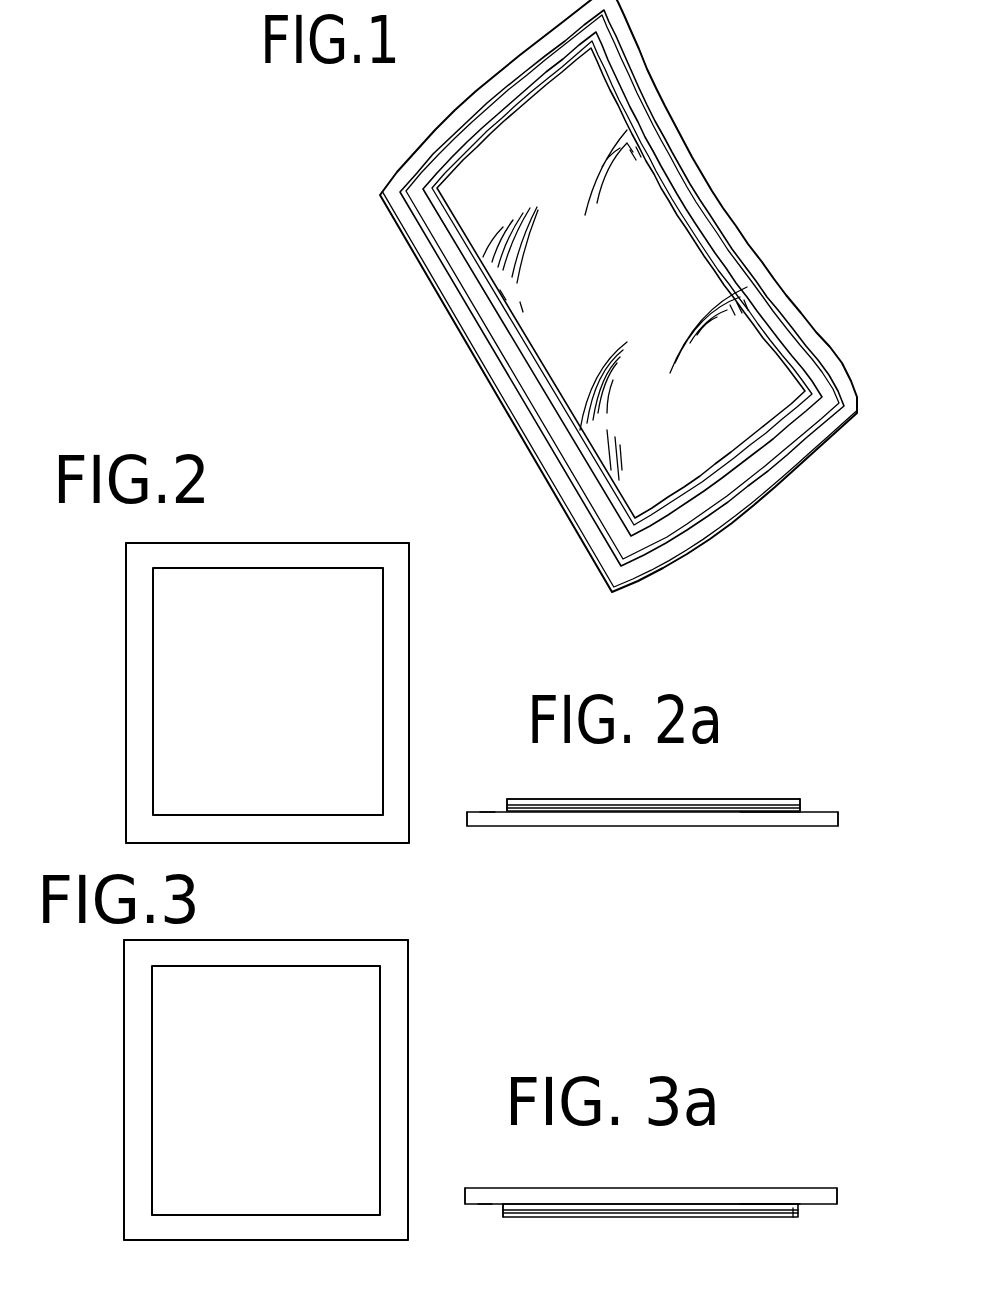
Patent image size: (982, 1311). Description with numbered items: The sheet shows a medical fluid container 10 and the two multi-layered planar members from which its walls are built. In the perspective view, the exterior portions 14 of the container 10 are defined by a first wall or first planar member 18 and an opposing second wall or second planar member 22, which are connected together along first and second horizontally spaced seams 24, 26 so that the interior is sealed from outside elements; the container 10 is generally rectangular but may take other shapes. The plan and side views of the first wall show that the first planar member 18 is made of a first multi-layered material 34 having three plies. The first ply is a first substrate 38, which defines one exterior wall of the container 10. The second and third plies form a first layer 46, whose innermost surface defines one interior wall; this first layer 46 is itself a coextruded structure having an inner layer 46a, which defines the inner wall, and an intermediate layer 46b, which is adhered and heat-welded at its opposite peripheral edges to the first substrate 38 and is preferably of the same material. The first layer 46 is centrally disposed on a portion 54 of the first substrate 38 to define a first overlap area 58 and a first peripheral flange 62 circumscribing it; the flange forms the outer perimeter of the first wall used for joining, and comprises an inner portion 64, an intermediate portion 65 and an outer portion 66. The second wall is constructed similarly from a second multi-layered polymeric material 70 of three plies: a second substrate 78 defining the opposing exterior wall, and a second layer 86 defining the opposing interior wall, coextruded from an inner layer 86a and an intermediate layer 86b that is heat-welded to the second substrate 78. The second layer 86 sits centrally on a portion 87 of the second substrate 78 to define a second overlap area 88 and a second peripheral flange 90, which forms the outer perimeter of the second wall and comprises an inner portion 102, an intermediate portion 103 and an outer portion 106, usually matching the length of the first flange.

In FIG. 1, the container 10 is at (742, 143).
In FIG. 1, the exterior portions 14 is at (662, 256).
In FIG. 1, the first planar member 18 is at (478, 222).
In FIG. 2, the first planar member 18 is at (125, 572).
In FIG. 1, the second planar member 22 is at (468, 340).
In FIG. 3, the second planar member 22 is at (123, 975).
In FIG. 1, the first seam 24 is at (560, 414).
In FIG. 1, the second seam 26 is at (577, 493).
In FIG. 2, the first multi-layered material 34 is at (269, 539).
In FIG. 2A, the first multi-layered material 34 is at (718, 787).
In FIG. 2, the first substrate 38 is at (127, 657).
In FIG. 2A, the first substrate 38 is at (687, 818).
In FIG. 2, the first layer 46 is at (152, 728).
In FIG. 2A, the first layer 46 is at (602, 805).
In FIG. 2A, the inner layer 46a is at (620, 800).
In FIG. 2A, the intermediate layer 46b is at (773, 809).
In FIG. 2, the portion of the first substrate 54 is at (378, 566).
In FIG. 2A, the portion of the first substrate 54 is at (803, 814).
In FIG. 2, the first overlap area 58 is at (242, 750).
In FIG. 2A, the first overlap area 58 is at (757, 813).
In FIG. 2, the first peripheral flange 62 is at (393, 618).
In FIG. 2A, the first peripheral flange 62 is at (820, 803).
In FIG. 2A, the inner portion 64 is at (500, 811).
In FIG. 2A, the intermediate portion 65 is at (487, 811).
In FIG. 2A, the outer portion 66 is at (475, 811).
In FIG. 3, the second multi-layered polymeric material 70 is at (300, 938).
In FIG. 3, the second substrate 78 is at (133, 1062).
In FIG. 3A, the second substrate 78 is at (660, 1195).
In FIG. 3, the second layer 86 is at (167, 1125).
In FIG. 3A, the second layer 86 is at (638, 1217).
In FIG. 3A, the inner layer 86a is at (675, 1217).
In FIG. 3A, the intermediate layer 86b is at (740, 1217).
In FIG. 3, the portion of the second substrate 87 is at (380, 963).
In FIG. 3A, the portion of the second substrate 87 is at (790, 1217).
In FIG. 3, the second overlap area 88 is at (227, 1153).
In FIG. 3A, the second overlap area 88 is at (688, 1204).
In FIG. 3, the second peripheral flange 90 is at (400, 1002).
In FIG. 3A, the second peripheral flange 90 is at (817, 1212).
In FIG. 3A, the inner portion 102 is at (498, 1205).
In FIG. 3A, the intermediate portion 103 is at (485, 1205).
In FIG. 3A, the outer portion 106 is at (470, 1205).